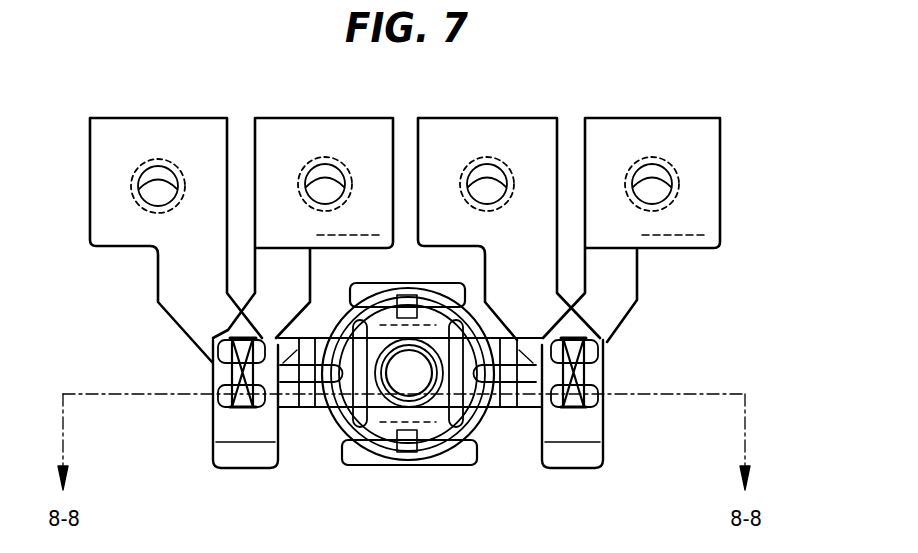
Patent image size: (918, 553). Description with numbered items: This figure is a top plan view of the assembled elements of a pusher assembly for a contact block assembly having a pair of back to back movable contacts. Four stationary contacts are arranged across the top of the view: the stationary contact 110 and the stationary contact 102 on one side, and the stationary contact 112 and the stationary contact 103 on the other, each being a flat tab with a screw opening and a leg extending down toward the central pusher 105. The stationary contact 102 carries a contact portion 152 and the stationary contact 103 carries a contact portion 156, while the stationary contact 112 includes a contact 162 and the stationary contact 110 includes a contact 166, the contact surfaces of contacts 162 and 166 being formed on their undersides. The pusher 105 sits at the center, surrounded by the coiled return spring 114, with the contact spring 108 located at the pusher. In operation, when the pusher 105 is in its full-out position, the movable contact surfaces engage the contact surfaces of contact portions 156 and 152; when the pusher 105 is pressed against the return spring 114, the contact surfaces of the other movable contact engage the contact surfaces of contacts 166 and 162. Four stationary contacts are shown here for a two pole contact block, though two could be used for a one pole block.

The stationary contact 102 is at (317, 130).
The stationary contact 103 is at (722, 185).
The pusher 105 is at (322, 444).
The contact spring 108 is at (440, 467).
The stationary contact 110 is at (147, 130).
The stationary contact 112 is at (478, 130).
The return spring 114 is at (473, 436).
The contact portion 152 is at (230, 460).
The contact portion 156 is at (582, 457).
The contact 162 is at (222, 417).
The contact 166 is at (597, 420).